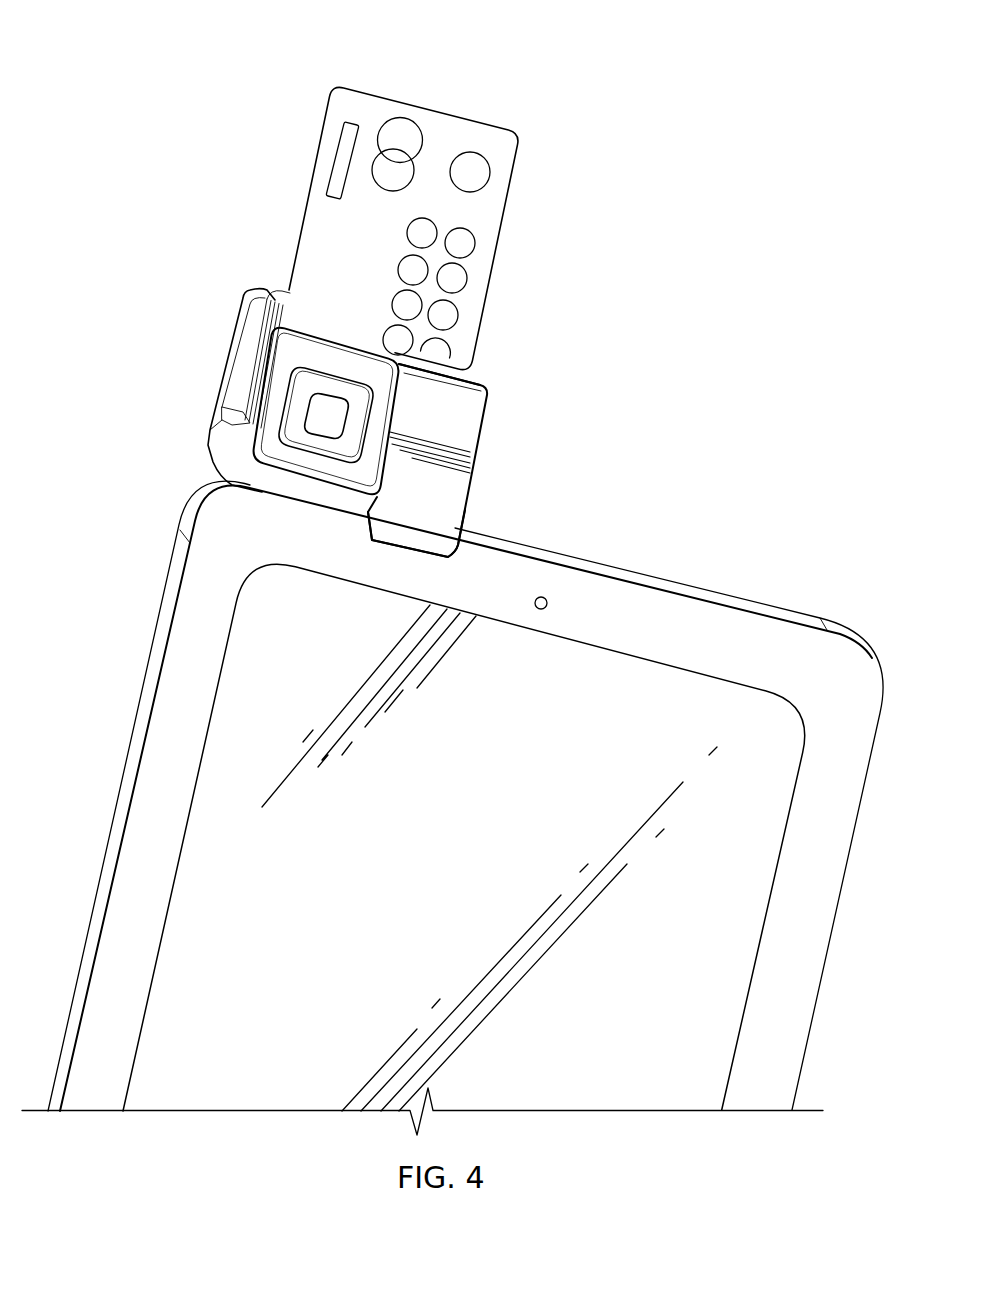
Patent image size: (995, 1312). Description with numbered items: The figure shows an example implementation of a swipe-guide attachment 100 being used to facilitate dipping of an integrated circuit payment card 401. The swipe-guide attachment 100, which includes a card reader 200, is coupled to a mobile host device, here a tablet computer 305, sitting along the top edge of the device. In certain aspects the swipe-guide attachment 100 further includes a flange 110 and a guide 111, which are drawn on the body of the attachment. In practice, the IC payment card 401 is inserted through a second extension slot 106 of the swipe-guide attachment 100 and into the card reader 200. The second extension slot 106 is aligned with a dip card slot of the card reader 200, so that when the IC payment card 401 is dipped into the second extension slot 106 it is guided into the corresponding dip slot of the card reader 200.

The integrated circuit (IC) payment card 401 is at (482, 163).
The card reader 200 is at (305, 382).
The guide 111 is at (238, 378).
The second extension slot 106 is at (473, 372).
The swipe-guide attachment 100 is at (427, 418).
The flange 110 is at (408, 539).
The tablet computer 305 is at (617, 570).